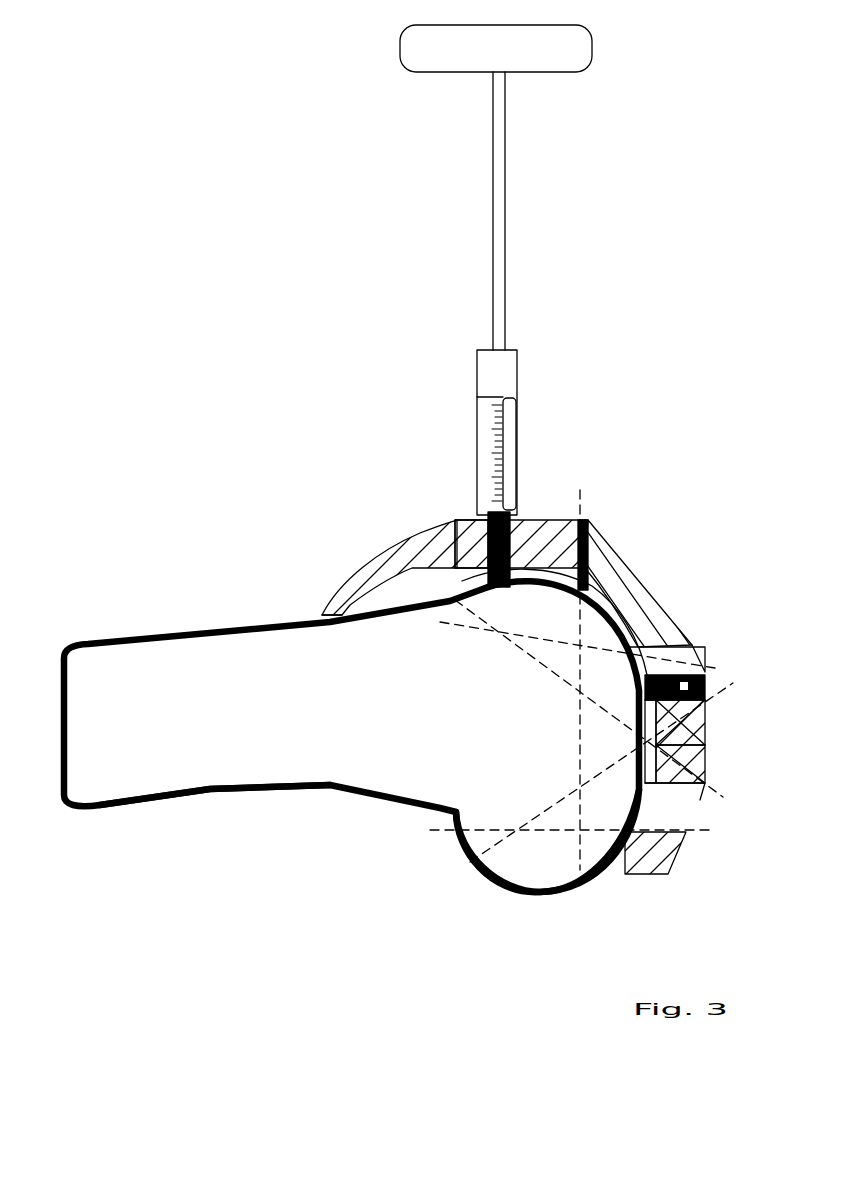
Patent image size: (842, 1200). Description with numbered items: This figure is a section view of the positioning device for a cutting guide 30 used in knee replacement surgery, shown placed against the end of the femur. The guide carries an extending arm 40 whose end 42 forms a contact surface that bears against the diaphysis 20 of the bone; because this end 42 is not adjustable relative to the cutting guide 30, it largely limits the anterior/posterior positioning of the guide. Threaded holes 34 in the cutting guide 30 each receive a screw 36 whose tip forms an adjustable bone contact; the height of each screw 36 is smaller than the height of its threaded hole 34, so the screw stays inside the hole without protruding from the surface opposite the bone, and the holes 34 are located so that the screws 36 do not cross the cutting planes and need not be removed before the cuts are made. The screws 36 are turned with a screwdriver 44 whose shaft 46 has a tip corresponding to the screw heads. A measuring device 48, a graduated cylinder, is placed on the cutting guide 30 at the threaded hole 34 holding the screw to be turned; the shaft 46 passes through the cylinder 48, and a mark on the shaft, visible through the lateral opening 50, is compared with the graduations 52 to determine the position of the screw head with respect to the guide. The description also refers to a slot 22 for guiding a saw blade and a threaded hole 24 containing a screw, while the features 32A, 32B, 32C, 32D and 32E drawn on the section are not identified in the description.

The diaphysis 20 is at (216, 626).
The slot 22 is at (535, 893).
The threaded hole 24 is at (213, 800).
The cutting guide 30 is at (670, 541).
The cup segment A 32A is at (672, 842).
The cup segment B 32B is at (706, 768).
The cup segment C 32C is at (706, 705).
The cup segment D 32D is at (700, 646).
The cup segment E 32E is at (592, 523).
The threaded hole 34 is at (530, 521).
The screw 36 is at (472, 520).
The extending arm 40 is at (386, 560).
The end 42 is at (324, 612).
The screwdriver 44 is at (548, 72).
The shaft 46 is at (487, 516).
The measuring device 48 is at (517, 360).
The lateral opening 50 is at (516, 422).
The graduations 52 is at (494, 413).